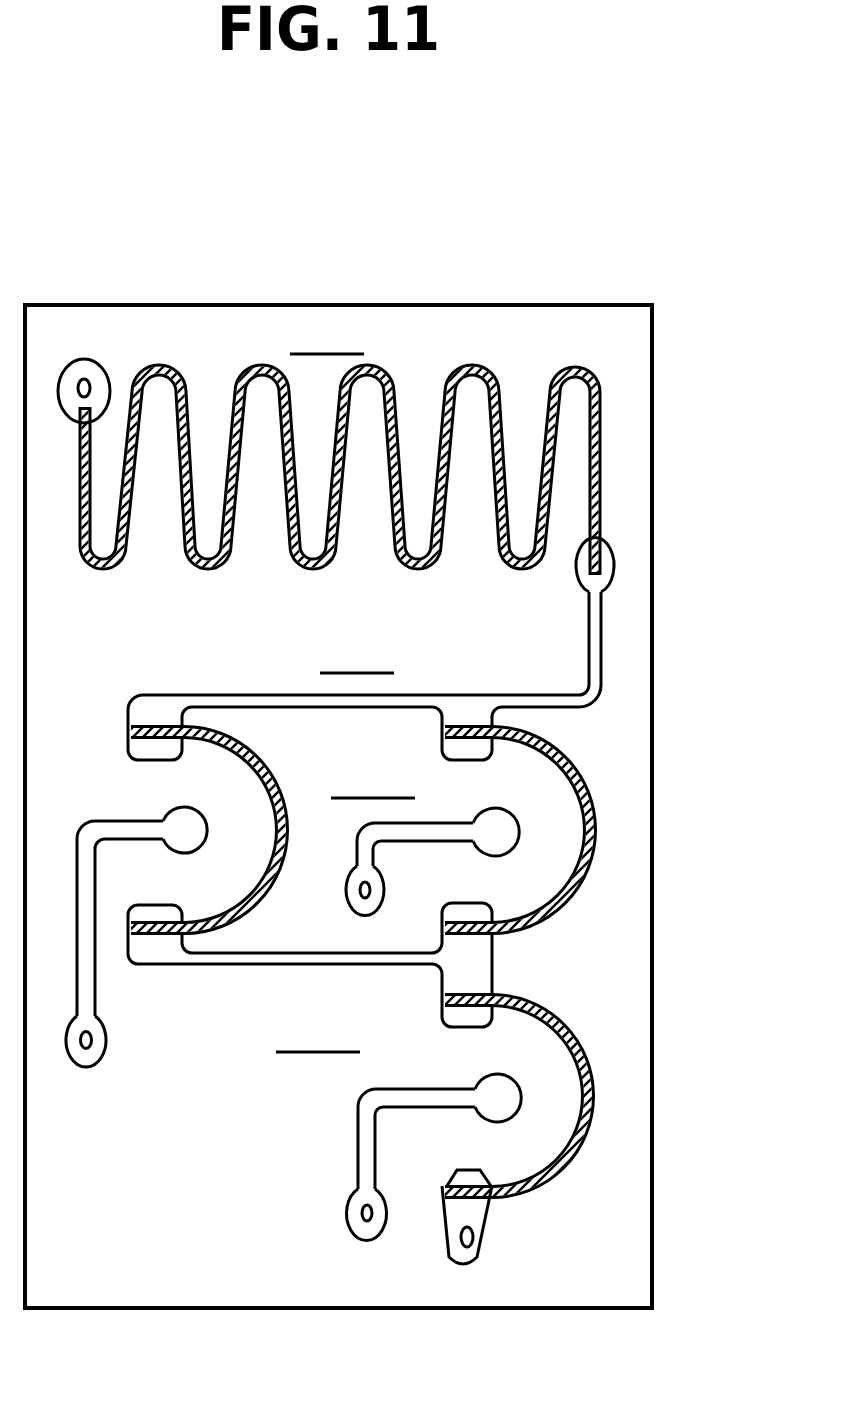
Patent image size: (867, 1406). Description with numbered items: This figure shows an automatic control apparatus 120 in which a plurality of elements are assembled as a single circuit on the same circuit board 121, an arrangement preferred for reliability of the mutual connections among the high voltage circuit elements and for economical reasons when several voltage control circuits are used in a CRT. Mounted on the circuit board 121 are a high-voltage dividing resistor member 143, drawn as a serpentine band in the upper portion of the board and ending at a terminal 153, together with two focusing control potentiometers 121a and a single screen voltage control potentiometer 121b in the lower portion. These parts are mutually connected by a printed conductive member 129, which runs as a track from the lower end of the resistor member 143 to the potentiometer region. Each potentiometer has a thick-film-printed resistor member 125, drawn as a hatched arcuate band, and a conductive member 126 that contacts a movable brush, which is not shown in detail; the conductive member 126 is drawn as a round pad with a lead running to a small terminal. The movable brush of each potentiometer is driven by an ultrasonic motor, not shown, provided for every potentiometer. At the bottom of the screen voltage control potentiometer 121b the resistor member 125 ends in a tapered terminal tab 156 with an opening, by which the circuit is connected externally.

The circuit board 121 is at (655, 355).
The focusing control potentiometer 121a is at (373, 776).
The screen voltage control potentiometer 121b is at (318, 1030).
The high-voltage dividing resistor member 143 is at (349, 447).
The terminal of heater conductor 153 is at (90, 360).
The automatic control apparatus 120 is at (411, 954).
The thick-film-printed resistor member 125 is at (282, 781).
The conductive member 126 is at (166, 811).
The printed conductive member 129 is at (490, 695).
The terminal tab 156 is at (477, 1259).